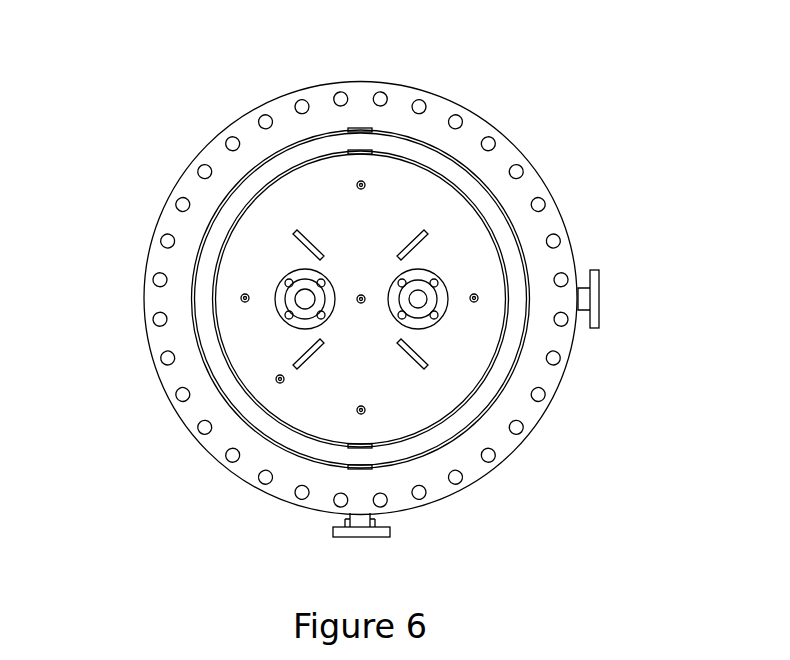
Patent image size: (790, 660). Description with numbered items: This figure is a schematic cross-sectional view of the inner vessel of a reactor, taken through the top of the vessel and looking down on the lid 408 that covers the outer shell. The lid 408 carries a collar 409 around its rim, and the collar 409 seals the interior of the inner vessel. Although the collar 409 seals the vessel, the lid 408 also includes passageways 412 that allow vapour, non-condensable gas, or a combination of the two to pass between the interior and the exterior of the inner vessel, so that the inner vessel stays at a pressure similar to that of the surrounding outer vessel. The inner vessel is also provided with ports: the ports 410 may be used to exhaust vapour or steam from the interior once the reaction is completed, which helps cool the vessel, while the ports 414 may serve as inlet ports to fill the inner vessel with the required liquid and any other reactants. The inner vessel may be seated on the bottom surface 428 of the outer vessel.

The lid 408 is at (307, 400).
The collar 409 is at (203, 148).
The ports 410 is at (420, 309).
The passageways 412 is at (357, 296).
The ports 414 is at (594, 298).
The bottom surface 428 is at (418, 232).